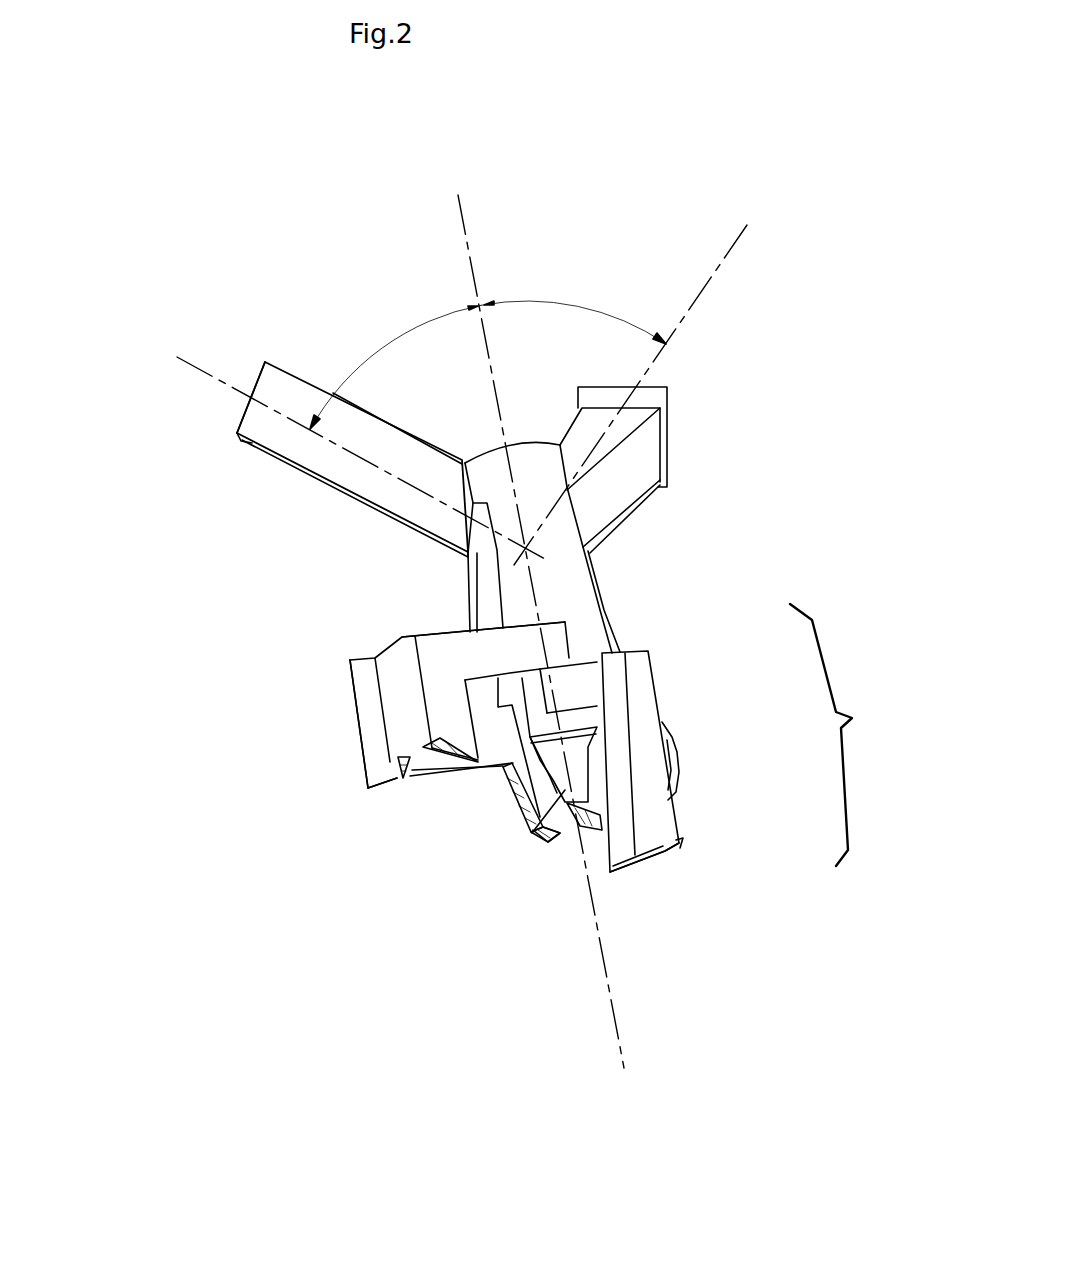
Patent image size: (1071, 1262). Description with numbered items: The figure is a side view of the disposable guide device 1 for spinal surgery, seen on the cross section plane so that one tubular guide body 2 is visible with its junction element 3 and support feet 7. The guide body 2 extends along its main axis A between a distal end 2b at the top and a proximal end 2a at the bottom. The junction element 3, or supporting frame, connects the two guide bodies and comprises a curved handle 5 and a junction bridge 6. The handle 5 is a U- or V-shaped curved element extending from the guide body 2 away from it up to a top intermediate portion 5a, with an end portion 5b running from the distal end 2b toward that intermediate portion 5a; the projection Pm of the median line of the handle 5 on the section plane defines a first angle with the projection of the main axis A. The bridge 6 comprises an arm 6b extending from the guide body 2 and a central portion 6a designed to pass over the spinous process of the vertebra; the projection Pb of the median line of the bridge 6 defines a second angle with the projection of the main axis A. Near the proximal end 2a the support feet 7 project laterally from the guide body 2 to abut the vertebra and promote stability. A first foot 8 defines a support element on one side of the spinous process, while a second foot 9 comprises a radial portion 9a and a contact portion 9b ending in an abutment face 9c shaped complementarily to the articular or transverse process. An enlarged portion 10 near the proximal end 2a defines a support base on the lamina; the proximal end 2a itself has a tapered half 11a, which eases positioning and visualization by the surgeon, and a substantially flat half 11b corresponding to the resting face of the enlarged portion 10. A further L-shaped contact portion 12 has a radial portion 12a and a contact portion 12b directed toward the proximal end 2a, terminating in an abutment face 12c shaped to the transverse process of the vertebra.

The guide device 1 is at (269, 1010).
The tubular guide body 2 is at (576, 593).
The proximal end 2a is at (543, 837).
The distal end 2b is at (540, 473).
The junction element 3 is at (284, 340).
The curved handle 5 is at (288, 473).
The top intermediate portion 5a is at (237, 414).
The end portion 5b is at (395, 496).
The junction bridge 6 is at (672, 454).
The central portion 6a is at (668, 427).
The arm 6b is at (617, 499).
The support feet 7 is at (833, 735).
The first foot 8 is at (686, 750).
The second foot 9 is at (343, 683).
The radial portion 9a is at (467, 650).
The contact portion 9b is at (372, 713).
The abutment face 9c is at (408, 774).
The enlarged portion 10 is at (514, 794).
The tapered half 11a is at (527, 830).
The flat half 11b is at (573, 825).
The further contact portion 12 is at (647, 700).
The radial portion 12a is at (583, 673).
The contact portion 12b is at (668, 820).
The abutment face 12c is at (663, 848).
The main axis A is at (622, 1050).
The projection of the median line of the handle Pm is at (190, 363).
The projection of the median line of the bridge Pb is at (745, 232).